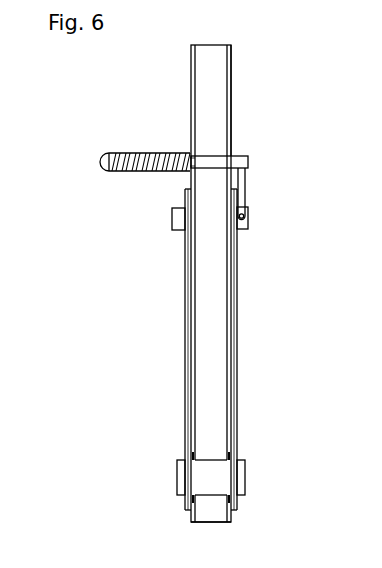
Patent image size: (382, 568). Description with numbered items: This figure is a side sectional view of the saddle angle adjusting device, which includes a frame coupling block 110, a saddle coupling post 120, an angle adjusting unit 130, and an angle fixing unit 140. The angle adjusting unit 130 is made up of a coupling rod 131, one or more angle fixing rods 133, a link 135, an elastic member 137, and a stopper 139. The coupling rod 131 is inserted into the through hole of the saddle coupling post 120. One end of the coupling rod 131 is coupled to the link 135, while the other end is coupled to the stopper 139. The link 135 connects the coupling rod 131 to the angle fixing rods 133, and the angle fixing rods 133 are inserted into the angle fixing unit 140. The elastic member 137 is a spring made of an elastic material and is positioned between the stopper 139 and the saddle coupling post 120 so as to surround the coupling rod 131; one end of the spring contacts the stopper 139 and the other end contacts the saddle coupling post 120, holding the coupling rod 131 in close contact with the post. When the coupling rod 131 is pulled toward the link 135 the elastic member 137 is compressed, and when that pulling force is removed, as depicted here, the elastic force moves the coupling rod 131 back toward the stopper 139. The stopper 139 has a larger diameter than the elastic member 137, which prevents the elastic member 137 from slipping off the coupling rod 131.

The frame coupling block 110 is at (207, 506).
The saddle coupling post 120 is at (218, 341).
The angle adjusting unit 130 is at (249, 161).
The coupling rod 131 is at (232, 151).
The angle fixing rod 133 is at (248, 217).
The link 135 is at (243, 195).
The elastic member 137 is at (143, 152).
The stopper 139 is at (101, 158).
The angle fixing unit 140 is at (237, 308).